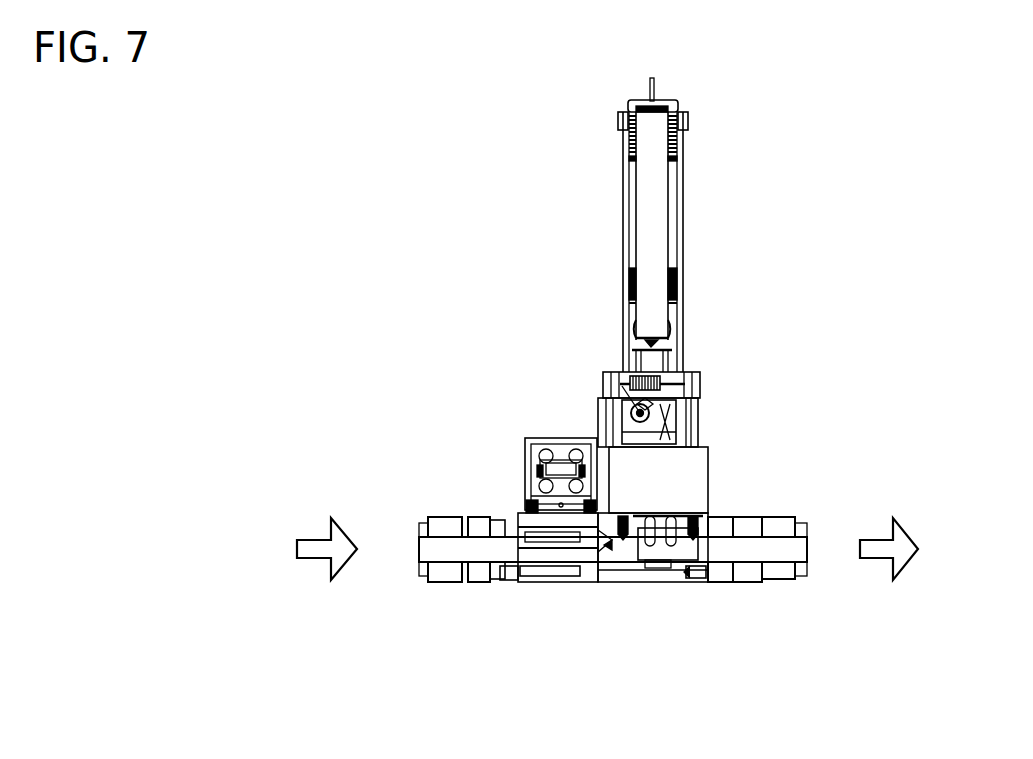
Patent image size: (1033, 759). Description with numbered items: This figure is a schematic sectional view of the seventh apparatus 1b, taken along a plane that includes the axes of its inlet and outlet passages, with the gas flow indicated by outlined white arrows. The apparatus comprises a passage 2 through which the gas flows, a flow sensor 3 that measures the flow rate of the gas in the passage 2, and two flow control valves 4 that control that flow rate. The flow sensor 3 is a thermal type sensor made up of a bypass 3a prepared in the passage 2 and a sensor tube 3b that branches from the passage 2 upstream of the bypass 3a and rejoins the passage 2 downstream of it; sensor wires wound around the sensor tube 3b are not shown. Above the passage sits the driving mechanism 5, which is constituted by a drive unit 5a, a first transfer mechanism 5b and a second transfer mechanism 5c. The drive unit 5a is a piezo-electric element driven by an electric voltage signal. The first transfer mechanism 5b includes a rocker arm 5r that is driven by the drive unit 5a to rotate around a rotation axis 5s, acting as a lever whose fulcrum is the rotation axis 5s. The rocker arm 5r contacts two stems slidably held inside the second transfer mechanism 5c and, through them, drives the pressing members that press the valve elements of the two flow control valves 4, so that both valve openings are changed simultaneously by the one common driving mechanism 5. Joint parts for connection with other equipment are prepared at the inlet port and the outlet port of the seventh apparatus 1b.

The seventh apparatus 1b is at (413, 122).
The passage 2 is at (682, 552).
The flow sensor 3 is at (563, 344).
The bypass 3a is at (549, 552).
The sensor tube 3b is at (560, 455).
The flow control valve 4 is at (658, 550).
The driving mechanism 5 is at (860, 195).
The drive unit 5a is at (683, 241).
The first transfer mechanism 5b is at (698, 416).
The second transfer mechanism 5c is at (708, 475).
The rocker arm 5r is at (700, 366).
The rotation axis 5s is at (625, 385).